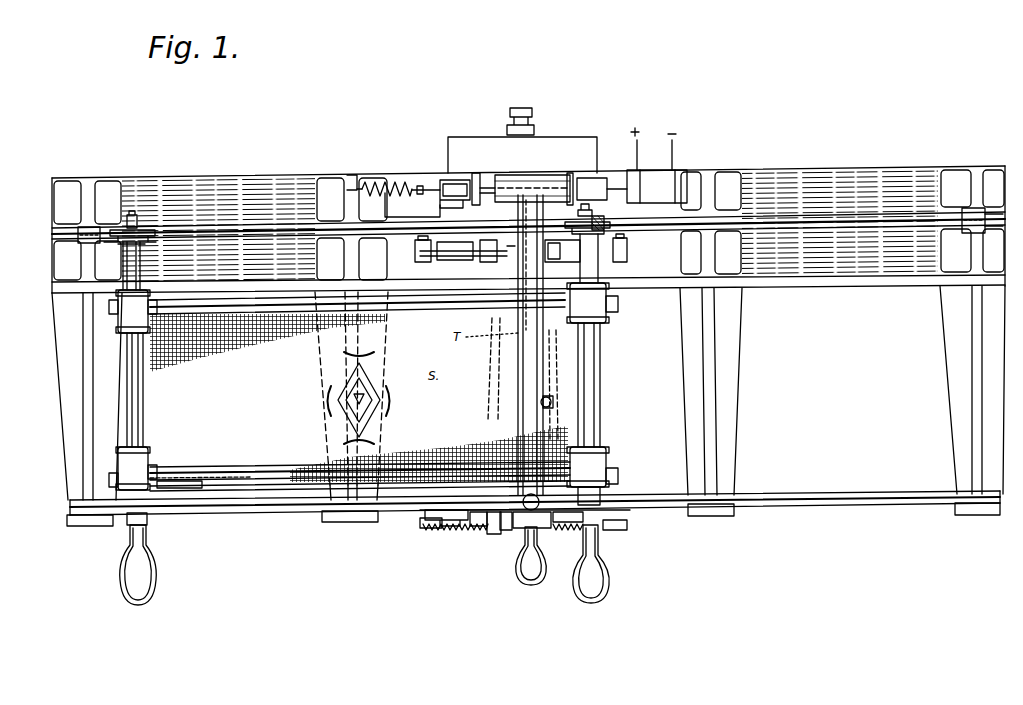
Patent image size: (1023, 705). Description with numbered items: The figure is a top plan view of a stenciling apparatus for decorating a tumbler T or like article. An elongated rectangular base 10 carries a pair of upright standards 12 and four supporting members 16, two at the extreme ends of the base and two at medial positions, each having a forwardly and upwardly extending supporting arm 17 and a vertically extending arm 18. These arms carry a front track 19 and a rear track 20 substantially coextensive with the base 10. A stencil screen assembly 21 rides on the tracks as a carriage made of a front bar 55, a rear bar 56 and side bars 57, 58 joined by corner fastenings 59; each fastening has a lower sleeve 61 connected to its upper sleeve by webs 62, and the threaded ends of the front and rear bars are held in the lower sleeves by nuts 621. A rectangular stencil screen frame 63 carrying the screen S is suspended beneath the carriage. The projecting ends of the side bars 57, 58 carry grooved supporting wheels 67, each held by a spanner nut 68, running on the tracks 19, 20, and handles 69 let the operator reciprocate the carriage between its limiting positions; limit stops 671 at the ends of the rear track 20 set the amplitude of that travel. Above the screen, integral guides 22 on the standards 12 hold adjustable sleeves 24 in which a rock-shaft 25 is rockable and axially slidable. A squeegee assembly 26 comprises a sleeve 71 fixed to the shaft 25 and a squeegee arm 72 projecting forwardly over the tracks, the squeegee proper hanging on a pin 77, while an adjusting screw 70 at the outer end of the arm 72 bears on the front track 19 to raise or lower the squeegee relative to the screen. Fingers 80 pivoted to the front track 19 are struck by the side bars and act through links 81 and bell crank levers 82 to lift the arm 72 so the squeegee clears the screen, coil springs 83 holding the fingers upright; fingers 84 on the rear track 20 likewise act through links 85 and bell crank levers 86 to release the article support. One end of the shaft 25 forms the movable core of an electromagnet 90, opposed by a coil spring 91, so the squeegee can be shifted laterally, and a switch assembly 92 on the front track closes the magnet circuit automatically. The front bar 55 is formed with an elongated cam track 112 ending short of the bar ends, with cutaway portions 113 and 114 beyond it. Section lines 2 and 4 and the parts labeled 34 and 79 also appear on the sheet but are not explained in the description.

The section line 2- 2 is at (525, 106).
The section line 4- 4 is at (401, 512).
The base 10 is at (826, 176).
The standards 12 is at (440, 217).
The supporting members 16 is at (67, 366).
The supporting arm 17 is at (334, 516).
The vertically extending arm 18 is at (340, 255).
The front track 19 is at (262, 506).
The rear track 20 is at (280, 234).
The stencil screen assembly 21 is at (359, 398).
The guides 22 is at (441, 182).
The adjustable sleeves 24 is at (477, 174).
The rock-shaft 25 is at (610, 182).
The squeegee assembly 26 is at (520, 363).
The adjusting nut 34 is at (533, 111).
The front bar 55 is at (185, 478).
The rear bar 56 is at (286, 300).
The side bar 57 is at (145, 408).
The side bar 58 is at (598, 381).
The corner fastenings 59 is at (128, 323).
The lower sleeve 61 is at (448, 511).
The webs 62 is at (156, 472).
The nuts 621 is at (618, 305).
The stencil screen frame 63 is at (432, 303).
The grooved supporting wheel 67 is at (122, 244).
The limit stops 671 is at (80, 243).
The spanner nut 68 is at (128, 217).
The handles 69 is at (154, 590).
The adjusting screw 70 is at (527, 522).
The sleeve 71 is at (538, 169).
The squeegee arm 72 is at (520, 379).
The pin 77 is at (551, 398).
The central handle 79 is at (524, 573).
The fingers 80 is at (426, 529).
The links 81 is at (456, 500).
The bell crank lever 82 is at (494, 535).
The coil spring 83 is at (455, 533).
The fingers 84 is at (420, 262).
The links 85 is at (455, 260).
The bell crank lever 86 is at (512, 256).
The electromagnet 90 is at (655, 180).
The coil spring 91 is at (371, 184).
The switch assembly 92 is at (486, 506).
The cam track 112 is at (298, 492).
The cutaway portion 113 is at (565, 504).
The cutaway portion 114 is at (203, 485).